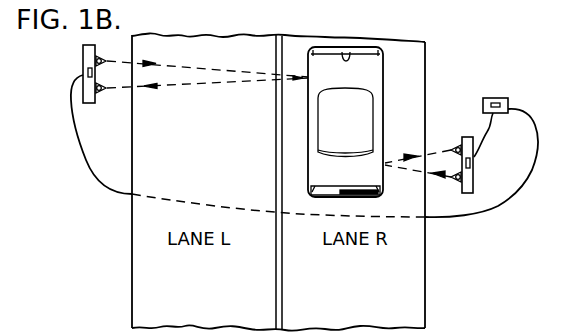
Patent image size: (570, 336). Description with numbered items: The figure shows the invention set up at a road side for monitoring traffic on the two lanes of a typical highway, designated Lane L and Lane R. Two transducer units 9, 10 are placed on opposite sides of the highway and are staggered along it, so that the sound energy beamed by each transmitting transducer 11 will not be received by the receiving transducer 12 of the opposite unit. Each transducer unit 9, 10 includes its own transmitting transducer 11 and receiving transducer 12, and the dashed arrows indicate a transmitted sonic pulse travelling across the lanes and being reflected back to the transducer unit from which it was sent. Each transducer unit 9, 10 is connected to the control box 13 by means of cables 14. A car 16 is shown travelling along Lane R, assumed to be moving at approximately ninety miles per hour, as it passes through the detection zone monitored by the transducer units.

The transducer unit 9 is at (473, 181).
The transducer unit 10 is at (83, 55).
The transmitting transducer 11 is at (104, 57).
The receiving transducer 12 is at (104, 93).
The control box 13 is at (495, 98).
The cables 14 is at (530, 130).
The car 16 is at (383, 83).